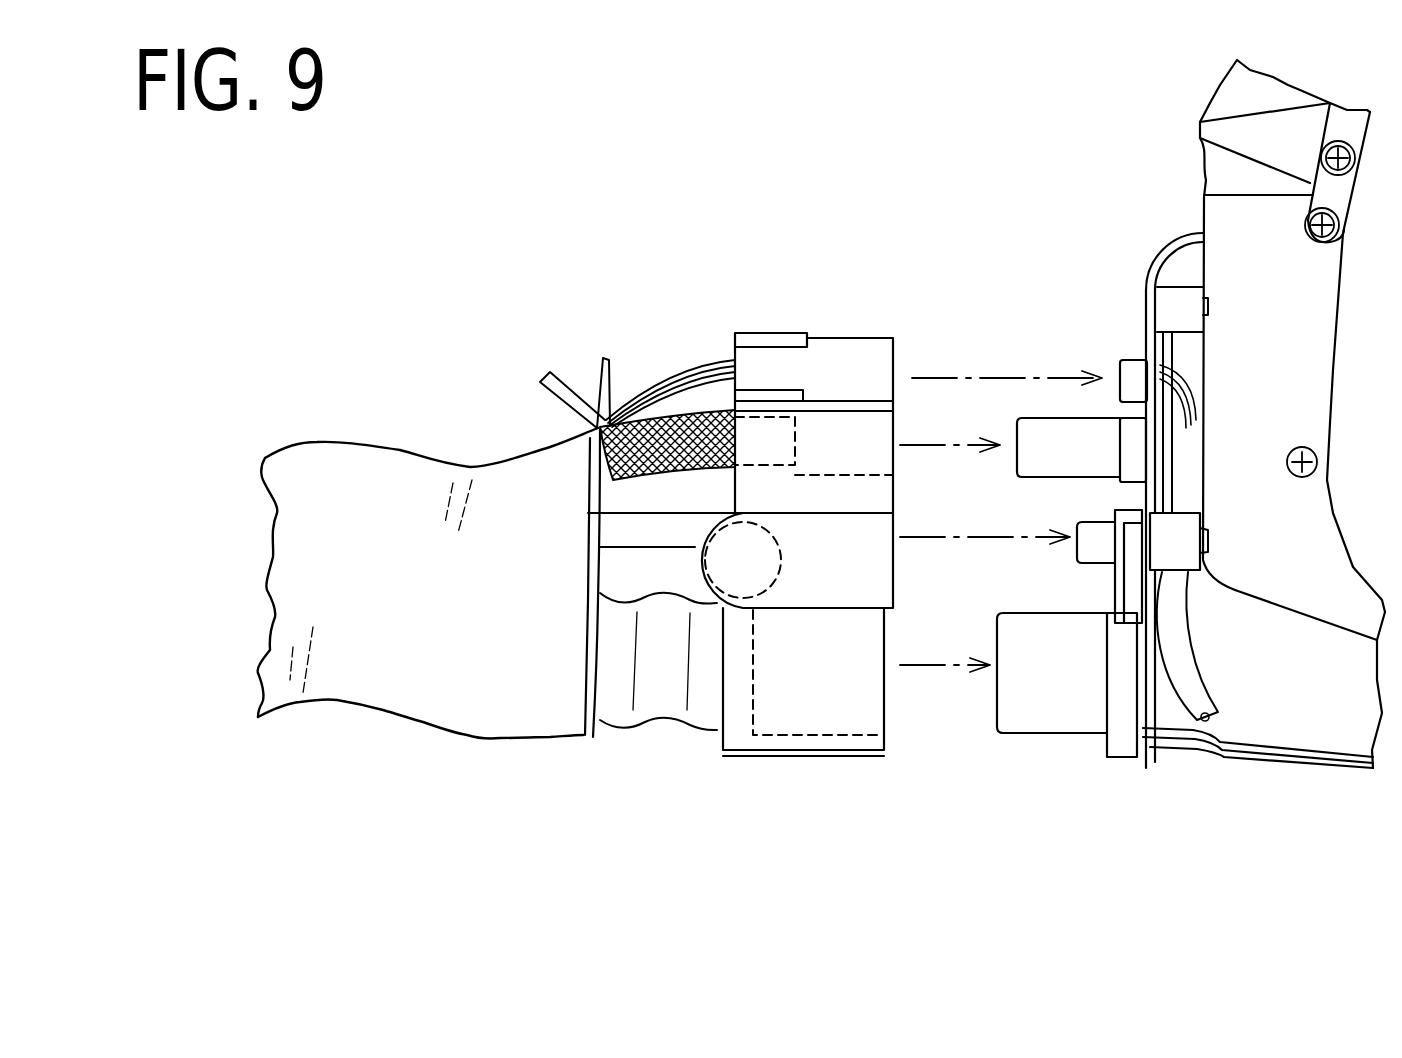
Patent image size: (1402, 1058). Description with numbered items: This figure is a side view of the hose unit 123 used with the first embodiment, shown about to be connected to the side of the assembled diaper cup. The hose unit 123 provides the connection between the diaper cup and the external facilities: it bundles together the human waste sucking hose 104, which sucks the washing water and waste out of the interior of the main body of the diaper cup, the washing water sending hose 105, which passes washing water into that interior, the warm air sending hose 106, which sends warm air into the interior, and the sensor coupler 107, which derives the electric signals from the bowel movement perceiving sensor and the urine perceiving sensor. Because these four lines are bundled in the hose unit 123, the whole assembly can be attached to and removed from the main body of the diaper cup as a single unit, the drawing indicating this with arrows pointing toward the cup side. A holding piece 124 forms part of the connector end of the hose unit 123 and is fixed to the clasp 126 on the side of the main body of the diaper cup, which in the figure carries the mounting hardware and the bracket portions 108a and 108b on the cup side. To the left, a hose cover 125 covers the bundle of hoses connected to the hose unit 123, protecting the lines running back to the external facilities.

The human waste sucking hose 104 is at (670, 712).
The washing water sending hose 105 is at (663, 533).
The warm air sending hose 106 is at (665, 410).
The sensor coupler 107 is at (694, 362).
The bracket 108a is at (1187, 290).
The cable 108b is at (1185, 574).
The hose unit 123 is at (827, 333).
The holding piece 124 is at (826, 593).
The hose cover 125 is at (365, 450).
The clasp 126 is at (1117, 597).